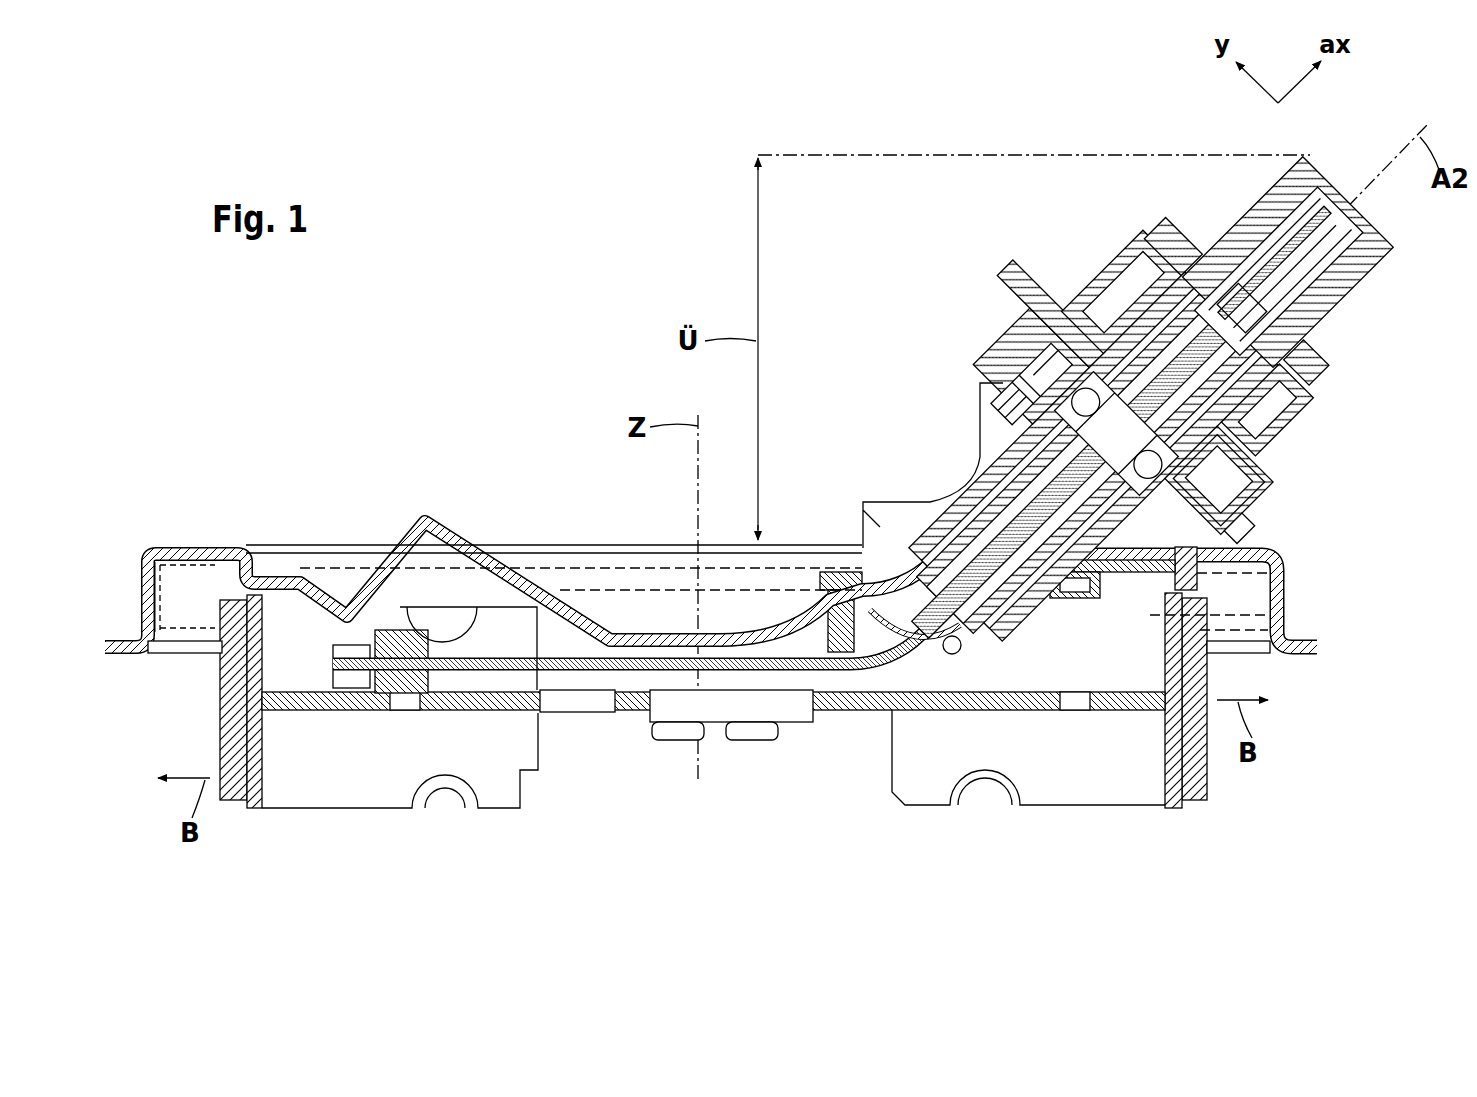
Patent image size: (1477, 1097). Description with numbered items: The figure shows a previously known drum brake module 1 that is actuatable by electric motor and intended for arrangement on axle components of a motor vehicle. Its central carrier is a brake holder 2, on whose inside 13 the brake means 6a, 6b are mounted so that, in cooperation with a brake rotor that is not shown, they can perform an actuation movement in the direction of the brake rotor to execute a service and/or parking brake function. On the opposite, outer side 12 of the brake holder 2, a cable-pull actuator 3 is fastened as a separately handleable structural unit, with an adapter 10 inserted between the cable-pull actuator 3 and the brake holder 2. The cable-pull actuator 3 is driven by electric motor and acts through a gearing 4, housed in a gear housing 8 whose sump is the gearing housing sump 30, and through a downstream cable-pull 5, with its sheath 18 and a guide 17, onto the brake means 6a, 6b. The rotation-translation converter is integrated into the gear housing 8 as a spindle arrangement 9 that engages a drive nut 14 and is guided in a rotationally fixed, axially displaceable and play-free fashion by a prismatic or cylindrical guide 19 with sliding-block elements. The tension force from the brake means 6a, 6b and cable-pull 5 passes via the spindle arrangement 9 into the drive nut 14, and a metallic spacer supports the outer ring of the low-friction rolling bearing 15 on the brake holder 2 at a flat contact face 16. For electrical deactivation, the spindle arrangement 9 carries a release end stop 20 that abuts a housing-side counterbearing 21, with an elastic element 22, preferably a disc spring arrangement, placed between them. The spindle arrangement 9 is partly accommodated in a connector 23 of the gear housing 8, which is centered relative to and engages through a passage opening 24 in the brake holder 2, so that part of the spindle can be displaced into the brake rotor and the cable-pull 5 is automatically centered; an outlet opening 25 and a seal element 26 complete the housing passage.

The drum brake module 1 is at (575, 392).
The brake holder 2 is at (192, 553).
The cable-pull actuator 3 is at (1051, 268).
The gearing 4 is at (1036, 300).
The cable-pull 5 is at (640, 684).
The brake means 6a is at (262, 785).
The brake means 6b is at (1168, 778).
The gear housing 8 is at (1298, 487).
The spindle arrangement 9 is at (1265, 440).
The adapter 10 is at (898, 530).
The outside 12 is at (290, 548).
The inside 13 is at (185, 570).
The drive nut 14 is at (1200, 290).
The bearing 15 is at (1010, 352).
The contact face 16 is at (1265, 505).
The guide 17 is at (742, 692).
The sheath 18 is at (772, 646).
The guide 19 is at (1328, 205).
The release end stop 20 is at (1252, 340).
The counterbearing 21 is at (1140, 295).
The elastic element 22 is at (1165, 300).
The connector 23 is at (1007, 478).
The passage opening 24 is at (1178, 622).
The outlet opening 25 is at (950, 655).
The seal element 26 is at (895, 690).
The gearing housing sump 30 is at (990, 378).